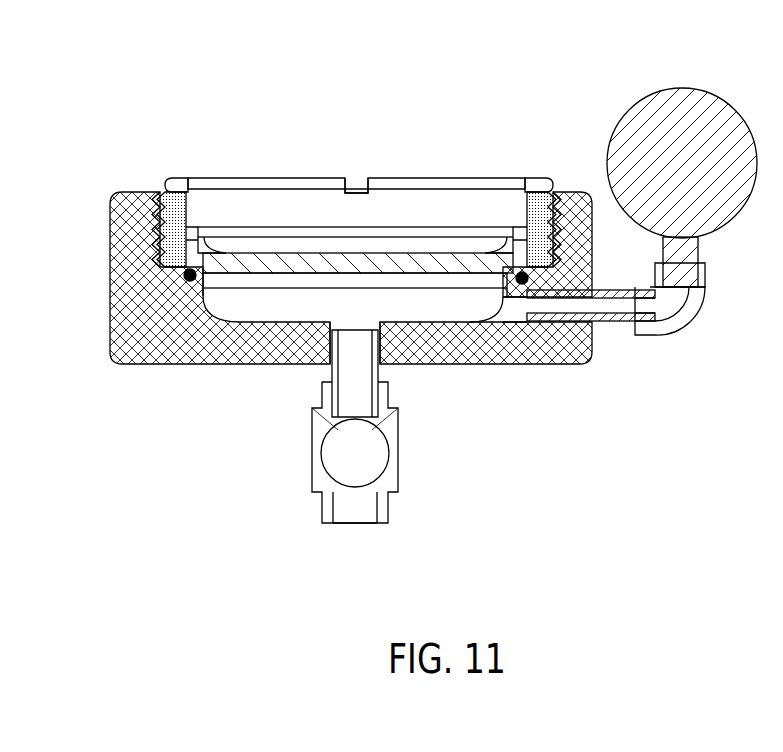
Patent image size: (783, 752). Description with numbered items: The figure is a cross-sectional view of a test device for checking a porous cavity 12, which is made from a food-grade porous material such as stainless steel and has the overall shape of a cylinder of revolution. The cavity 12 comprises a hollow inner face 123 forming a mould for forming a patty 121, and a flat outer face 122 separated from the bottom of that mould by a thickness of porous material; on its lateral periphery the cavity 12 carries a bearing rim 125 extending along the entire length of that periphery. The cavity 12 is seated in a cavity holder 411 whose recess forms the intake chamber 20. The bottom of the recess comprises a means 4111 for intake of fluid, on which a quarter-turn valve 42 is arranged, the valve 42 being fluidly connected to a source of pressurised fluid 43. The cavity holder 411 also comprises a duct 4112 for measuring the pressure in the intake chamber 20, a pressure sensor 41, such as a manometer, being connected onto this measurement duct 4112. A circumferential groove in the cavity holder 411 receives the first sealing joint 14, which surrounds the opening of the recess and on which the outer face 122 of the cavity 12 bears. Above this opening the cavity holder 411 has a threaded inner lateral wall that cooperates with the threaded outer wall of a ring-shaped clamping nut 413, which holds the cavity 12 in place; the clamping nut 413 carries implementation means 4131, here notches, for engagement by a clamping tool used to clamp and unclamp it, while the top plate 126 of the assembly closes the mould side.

The cavity holder 411 is at (148, 343).
The through hole 4111 is at (330, 327).
The duct 4112 is at (512, 308).
The clamping nut 413 is at (178, 188).
The implementation means 4131 is at (360, 190).
The patty 121 is at (415, 200).
The outer face 122 is at (408, 290).
The hollow inner face 123 is at (313, 243).
The bearing rim 125 is at (196, 238).
The top plate 126 is at (480, 212).
The cavity 12 is at (357, 261).
The first sealing joint 14 is at (185, 276).
The intake chamber 20 is at (285, 311).
The pressure sensor 41 is at (680, 250).
The valve 42 is at (396, 455).
The source of pressurised fluid 43 is at (355, 518).